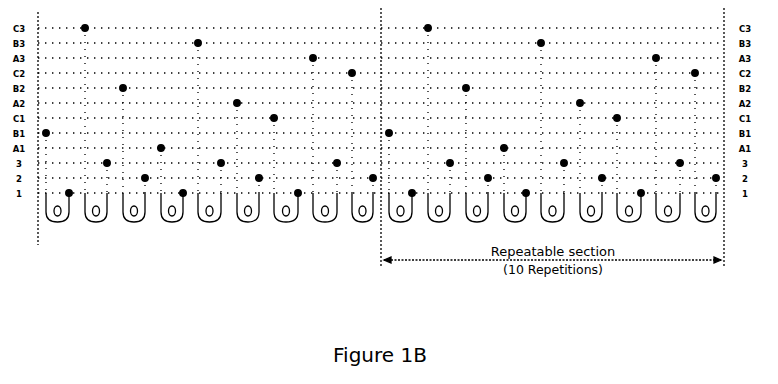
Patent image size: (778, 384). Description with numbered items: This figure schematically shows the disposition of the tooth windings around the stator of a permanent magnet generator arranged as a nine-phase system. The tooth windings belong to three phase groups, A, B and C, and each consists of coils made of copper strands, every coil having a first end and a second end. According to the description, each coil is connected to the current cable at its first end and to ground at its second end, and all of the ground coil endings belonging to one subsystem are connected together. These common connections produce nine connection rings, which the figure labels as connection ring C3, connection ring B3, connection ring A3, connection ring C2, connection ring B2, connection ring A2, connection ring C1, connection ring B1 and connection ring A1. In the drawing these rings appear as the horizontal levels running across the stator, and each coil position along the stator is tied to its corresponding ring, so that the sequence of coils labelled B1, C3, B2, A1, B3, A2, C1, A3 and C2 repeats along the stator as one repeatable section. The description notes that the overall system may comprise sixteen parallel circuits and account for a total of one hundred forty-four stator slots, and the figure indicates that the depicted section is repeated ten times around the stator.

The connection ring B1 is at (229, 183).
The connection ring C3 is at (268, 131).
The connection ring B2 is at (306, 161).
The connection ring A1 is at (344, 191).
The connection ring B3 is at (381, 138).
The connection ring A2 is at (420, 168).
The connection ring C1 is at (458, 176).
The connection ring A3 is at (497, 146).
The connection ring C2 is at (534, 153).